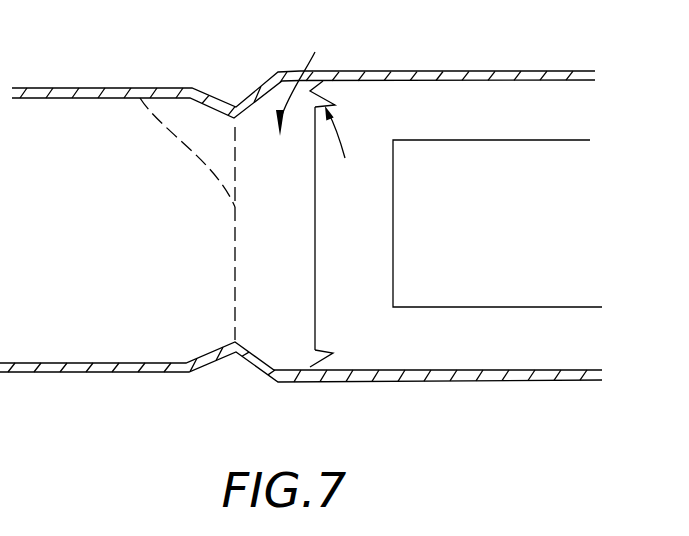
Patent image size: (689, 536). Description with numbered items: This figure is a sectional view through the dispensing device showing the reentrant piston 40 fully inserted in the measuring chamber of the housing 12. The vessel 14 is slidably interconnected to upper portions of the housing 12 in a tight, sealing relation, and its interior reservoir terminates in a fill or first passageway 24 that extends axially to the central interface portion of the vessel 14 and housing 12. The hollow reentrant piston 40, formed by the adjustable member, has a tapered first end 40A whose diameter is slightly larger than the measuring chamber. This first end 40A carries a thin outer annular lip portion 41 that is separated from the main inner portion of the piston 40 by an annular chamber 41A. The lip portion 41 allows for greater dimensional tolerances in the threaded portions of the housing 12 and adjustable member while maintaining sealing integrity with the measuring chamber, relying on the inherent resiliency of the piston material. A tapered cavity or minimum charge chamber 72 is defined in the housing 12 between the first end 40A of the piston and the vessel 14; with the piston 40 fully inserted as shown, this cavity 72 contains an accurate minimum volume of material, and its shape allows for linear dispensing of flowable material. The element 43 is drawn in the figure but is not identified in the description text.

The housing 12 is at (498, 70).
The vessel 14 is at (180, 88).
The first passageway 24 is at (130, 200).
The reentrant piston 40 is at (563, 108).
The first end of piston 40A is at (316, 259).
The lip portion 41 is at (275, 382).
The annular chamber 41A is at (342, 224).
The flap 43 is at (140, 82).
The minimum charge chamber 72 is at (306, 78).